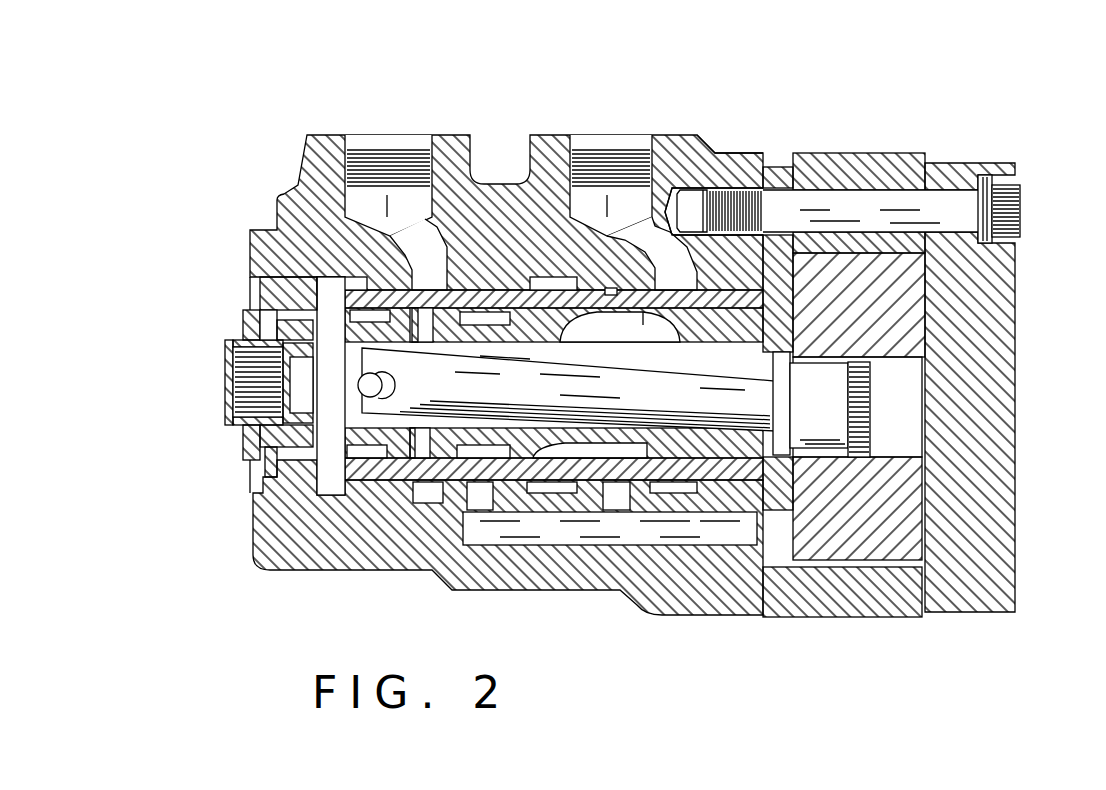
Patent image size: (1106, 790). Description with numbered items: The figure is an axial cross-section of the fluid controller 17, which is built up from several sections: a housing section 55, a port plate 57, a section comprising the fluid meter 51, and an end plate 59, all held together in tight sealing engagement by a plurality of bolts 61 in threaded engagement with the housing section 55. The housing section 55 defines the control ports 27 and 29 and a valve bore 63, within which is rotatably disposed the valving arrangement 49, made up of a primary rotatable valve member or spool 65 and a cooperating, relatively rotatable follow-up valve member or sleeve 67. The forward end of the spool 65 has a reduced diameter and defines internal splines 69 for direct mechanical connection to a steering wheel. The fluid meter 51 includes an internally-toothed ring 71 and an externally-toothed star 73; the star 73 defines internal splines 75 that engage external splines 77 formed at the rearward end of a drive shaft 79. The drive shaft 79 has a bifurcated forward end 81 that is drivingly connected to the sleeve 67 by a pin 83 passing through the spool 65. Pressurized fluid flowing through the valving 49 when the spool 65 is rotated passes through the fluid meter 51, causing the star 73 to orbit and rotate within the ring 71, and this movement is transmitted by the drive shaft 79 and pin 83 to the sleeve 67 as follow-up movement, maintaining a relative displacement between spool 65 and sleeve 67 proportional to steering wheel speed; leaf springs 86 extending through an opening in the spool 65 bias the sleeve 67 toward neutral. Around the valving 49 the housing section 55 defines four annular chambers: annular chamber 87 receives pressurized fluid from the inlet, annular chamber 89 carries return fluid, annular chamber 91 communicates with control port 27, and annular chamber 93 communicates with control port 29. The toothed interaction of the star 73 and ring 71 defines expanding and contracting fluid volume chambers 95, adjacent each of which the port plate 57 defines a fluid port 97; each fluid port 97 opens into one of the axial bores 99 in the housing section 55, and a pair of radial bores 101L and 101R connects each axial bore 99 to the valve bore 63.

The fluid controller 17 is at (311, 118).
The control port 27 is at (412, 160).
The control port 29 is at (627, 162).
The housing section 55 is at (717, 165).
The port plate 57 is at (779, 168).
The fluid meter 51 is at (871, 153).
The end plate 59 is at (965, 163).
The bolts 61 is at (1022, 212).
The annular chamber 89 is at (356, 284).
The annular chamber 91 is at (442, 283).
The annular chamber 87 is at (560, 278).
The valve bore 63 is at (617, 293).
The annular chamber 93 is at (688, 282).
The externally-toothed star 73 is at (890, 300).
The spool 65 is at (611, 340).
The valving arrangement 49 is at (702, 340).
The bifurcated forward end 81 is at (385, 382).
The pin 83 is at (382, 392).
The drive shaft 79 is at (568, 389).
The external splines 77 is at (858, 430).
The internal splines 75 is at (890, 456).
The internal splines 69 is at (240, 392).
The leaf springs 86 is at (326, 455).
The sleeve 67 is at (408, 470).
The radial bore 101L is at (473, 495).
The radial bore 101R is at (622, 515).
The axial bores 99 is at (545, 538).
The fluid port 97 is at (778, 540).
The fluid volume chambers 95 is at (895, 560).
The internally-toothed ring 71 is at (880, 600).